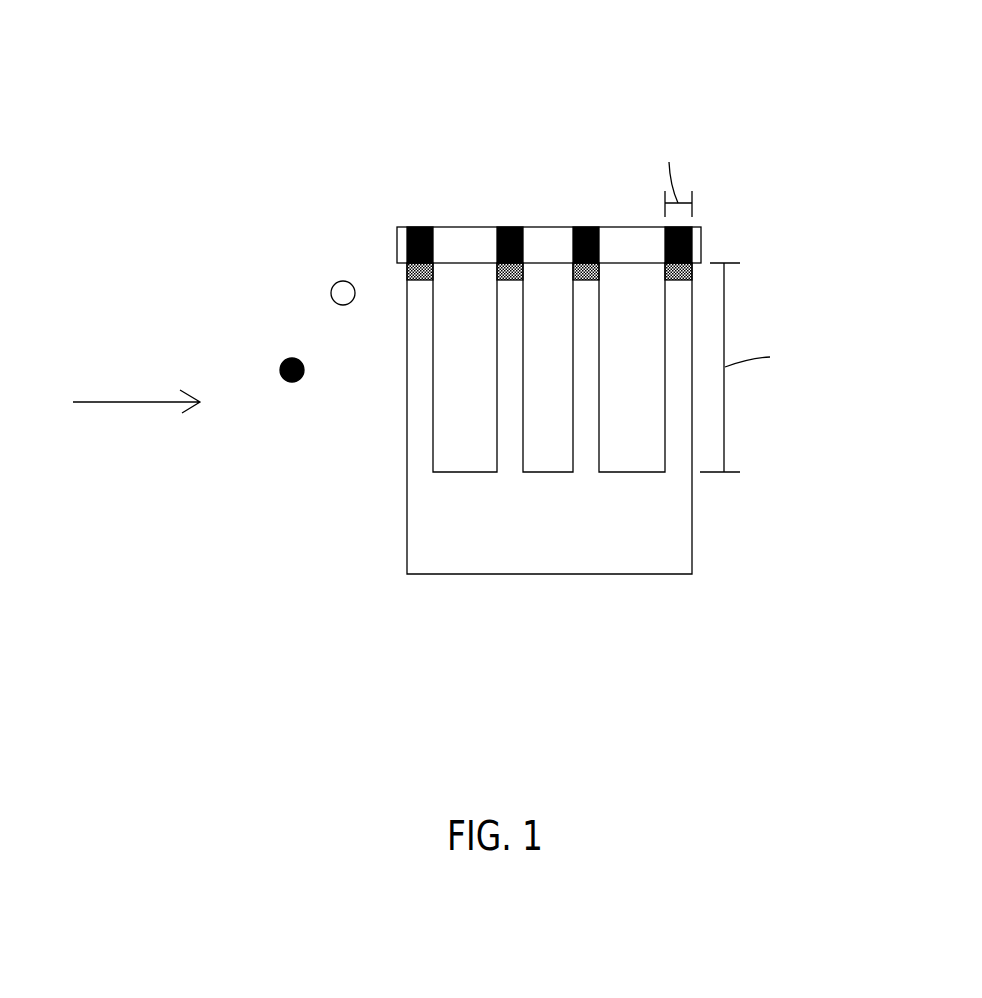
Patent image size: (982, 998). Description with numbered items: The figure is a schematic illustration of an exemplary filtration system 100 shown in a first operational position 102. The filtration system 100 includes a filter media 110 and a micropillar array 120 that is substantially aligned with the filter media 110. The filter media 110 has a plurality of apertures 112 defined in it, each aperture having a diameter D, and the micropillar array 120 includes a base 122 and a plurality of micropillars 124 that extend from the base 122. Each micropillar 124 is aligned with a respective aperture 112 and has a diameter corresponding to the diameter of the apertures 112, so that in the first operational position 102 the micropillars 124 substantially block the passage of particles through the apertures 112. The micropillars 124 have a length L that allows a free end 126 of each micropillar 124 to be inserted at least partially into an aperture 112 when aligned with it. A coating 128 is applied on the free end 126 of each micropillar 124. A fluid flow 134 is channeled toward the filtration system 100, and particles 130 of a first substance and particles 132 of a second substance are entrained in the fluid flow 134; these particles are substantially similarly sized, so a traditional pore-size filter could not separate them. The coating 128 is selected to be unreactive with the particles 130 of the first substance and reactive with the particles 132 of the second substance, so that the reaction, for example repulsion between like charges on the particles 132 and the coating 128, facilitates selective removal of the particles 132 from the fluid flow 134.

The filtration system 100 is at (292, 58).
The first operational position 102 is at (360, 182).
The filter media 110 is at (695, 245).
The apertures 112 is at (420, 227).
The micropillar array 120 is at (720, 515).
The base 122 is at (422, 548).
The micropillars 124 is at (418, 428).
The free end 126 is at (383, 317).
The coating 128 is at (407, 272).
The particles of a first substance 130 is at (330, 293).
The particles of a second substance 132 is at (280, 370).
The fluid flow 134 is at (138, 400).